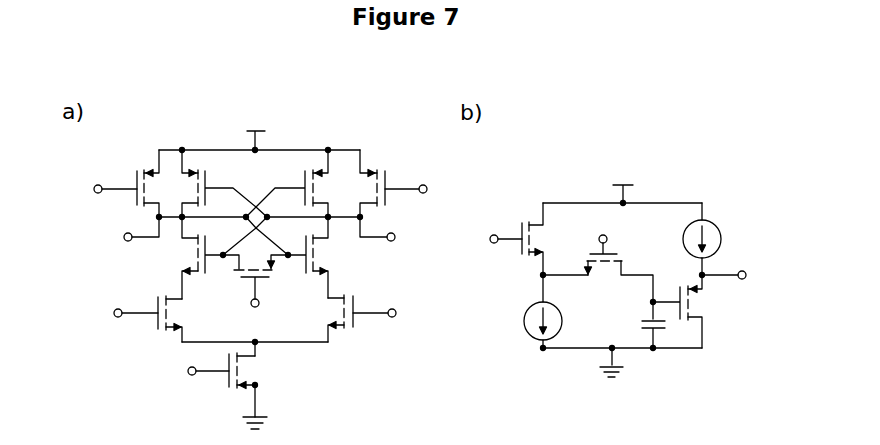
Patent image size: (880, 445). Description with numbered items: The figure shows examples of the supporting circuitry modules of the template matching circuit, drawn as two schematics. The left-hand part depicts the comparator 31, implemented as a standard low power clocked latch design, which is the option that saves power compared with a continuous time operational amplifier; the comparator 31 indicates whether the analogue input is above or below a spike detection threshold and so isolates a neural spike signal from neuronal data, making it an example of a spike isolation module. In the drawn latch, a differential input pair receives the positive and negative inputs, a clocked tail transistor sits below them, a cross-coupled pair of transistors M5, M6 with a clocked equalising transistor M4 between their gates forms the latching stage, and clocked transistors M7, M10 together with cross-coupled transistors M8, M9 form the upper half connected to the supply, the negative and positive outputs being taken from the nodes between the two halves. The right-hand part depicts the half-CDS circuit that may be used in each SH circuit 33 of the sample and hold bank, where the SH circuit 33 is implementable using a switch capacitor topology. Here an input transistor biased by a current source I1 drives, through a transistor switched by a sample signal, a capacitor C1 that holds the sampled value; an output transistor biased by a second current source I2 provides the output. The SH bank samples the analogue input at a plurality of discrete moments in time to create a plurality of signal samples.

The comparator 31 is at (359, 126).
The SH circuit 33 is at (681, 151).
The transistor M4 is at (245, 288).
The transistor M5 is at (197, 258).
The transistor M6 is at (312, 257).
The transistor M7 is at (142, 182).
The transistor M8 is at (219, 183).
The transistor M9 is at (292, 183).
The transistor M10 is at (383, 182).
The capacitor C1 is at (640, 331).
The current source I1 is at (536, 311).
The current source I2 is at (705, 239).